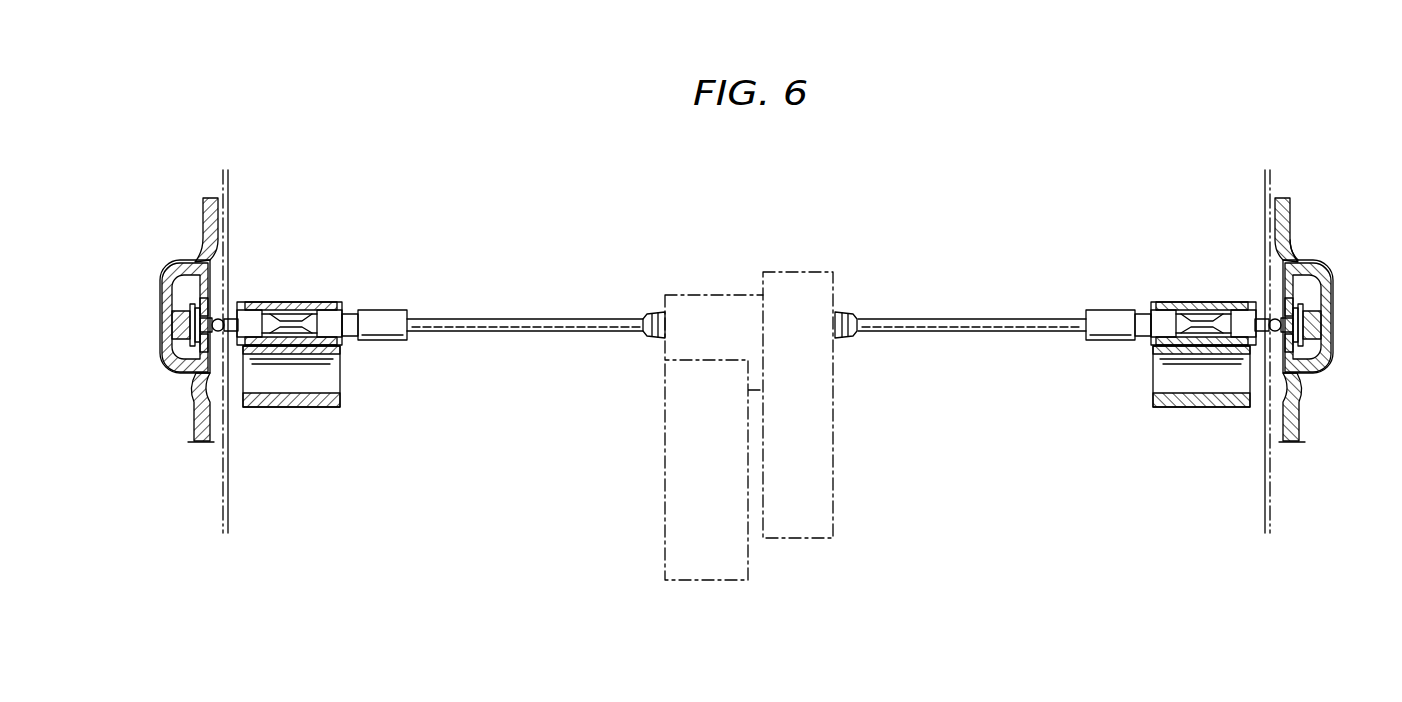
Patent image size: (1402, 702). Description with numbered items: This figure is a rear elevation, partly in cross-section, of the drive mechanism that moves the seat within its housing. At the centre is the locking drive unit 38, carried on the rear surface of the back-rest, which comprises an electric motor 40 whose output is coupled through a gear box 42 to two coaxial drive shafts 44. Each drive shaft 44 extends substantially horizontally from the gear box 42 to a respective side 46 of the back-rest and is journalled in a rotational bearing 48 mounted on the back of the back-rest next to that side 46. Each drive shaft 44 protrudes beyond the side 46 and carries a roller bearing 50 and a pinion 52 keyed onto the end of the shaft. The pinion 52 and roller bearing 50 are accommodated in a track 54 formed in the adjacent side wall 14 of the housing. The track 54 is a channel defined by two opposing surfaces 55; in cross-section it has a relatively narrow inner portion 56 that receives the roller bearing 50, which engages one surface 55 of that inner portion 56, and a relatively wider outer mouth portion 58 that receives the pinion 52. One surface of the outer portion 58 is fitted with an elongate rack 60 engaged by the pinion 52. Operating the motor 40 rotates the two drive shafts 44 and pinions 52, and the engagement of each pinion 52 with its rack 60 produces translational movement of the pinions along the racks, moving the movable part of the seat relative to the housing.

The side wall 14 is at (207, 214).
The locking drive unit 38 is at (764, 389).
The electric motor 40 is at (693, 408).
The gear box 42 is at (828, 460).
The drive shaft 44 is at (486, 319).
The side 46 is at (228, 208).
The rotational bearing 48 is at (327, 298).
The roller bearing 50 is at (172, 368).
The pinion 52 is at (217, 436).
The track 54 is at (165, 256).
The opposing surface 55 is at (162, 312).
The inner portion 56 is at (165, 288).
The outer mouth portion 58 is at (200, 366).
The rack 60 is at (1293, 258).